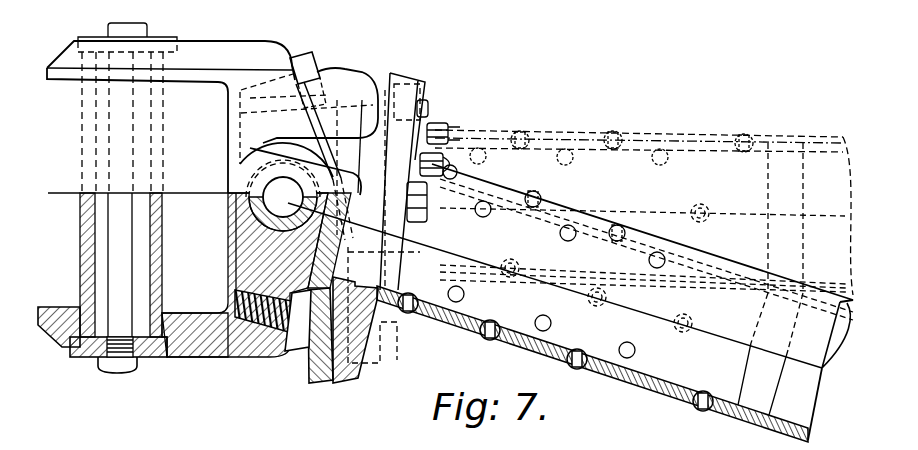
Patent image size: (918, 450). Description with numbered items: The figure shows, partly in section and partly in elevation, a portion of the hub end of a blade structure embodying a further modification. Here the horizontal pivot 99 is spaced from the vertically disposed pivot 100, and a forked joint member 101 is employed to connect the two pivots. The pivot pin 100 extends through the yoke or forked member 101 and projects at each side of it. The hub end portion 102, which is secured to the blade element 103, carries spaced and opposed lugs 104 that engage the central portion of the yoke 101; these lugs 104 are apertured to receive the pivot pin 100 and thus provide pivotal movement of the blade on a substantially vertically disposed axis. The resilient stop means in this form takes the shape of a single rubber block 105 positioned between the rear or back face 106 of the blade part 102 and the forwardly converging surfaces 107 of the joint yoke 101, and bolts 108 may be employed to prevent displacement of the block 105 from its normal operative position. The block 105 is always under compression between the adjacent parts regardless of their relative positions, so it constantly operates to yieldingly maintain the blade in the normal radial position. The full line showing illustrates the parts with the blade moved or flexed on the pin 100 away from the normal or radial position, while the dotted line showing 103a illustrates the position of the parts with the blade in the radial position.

The horizontal pivot 99 is at (158, 238).
The vertically disposed pivot 100 is at (250, 215).
The forked joint member 101 is at (208, 348).
The hub end portion 102 is at (333, 382).
The blade element 103 is at (634, 388).
The dotted line showing 103a is at (578, 133).
The lugs 104 is at (250, 166).
The rubber block 105 is at (344, 80).
The rear or back face 106 is at (296, 366).
The forwardly converging surfaces 107 is at (322, 86).
The bolts 108 is at (303, 60).